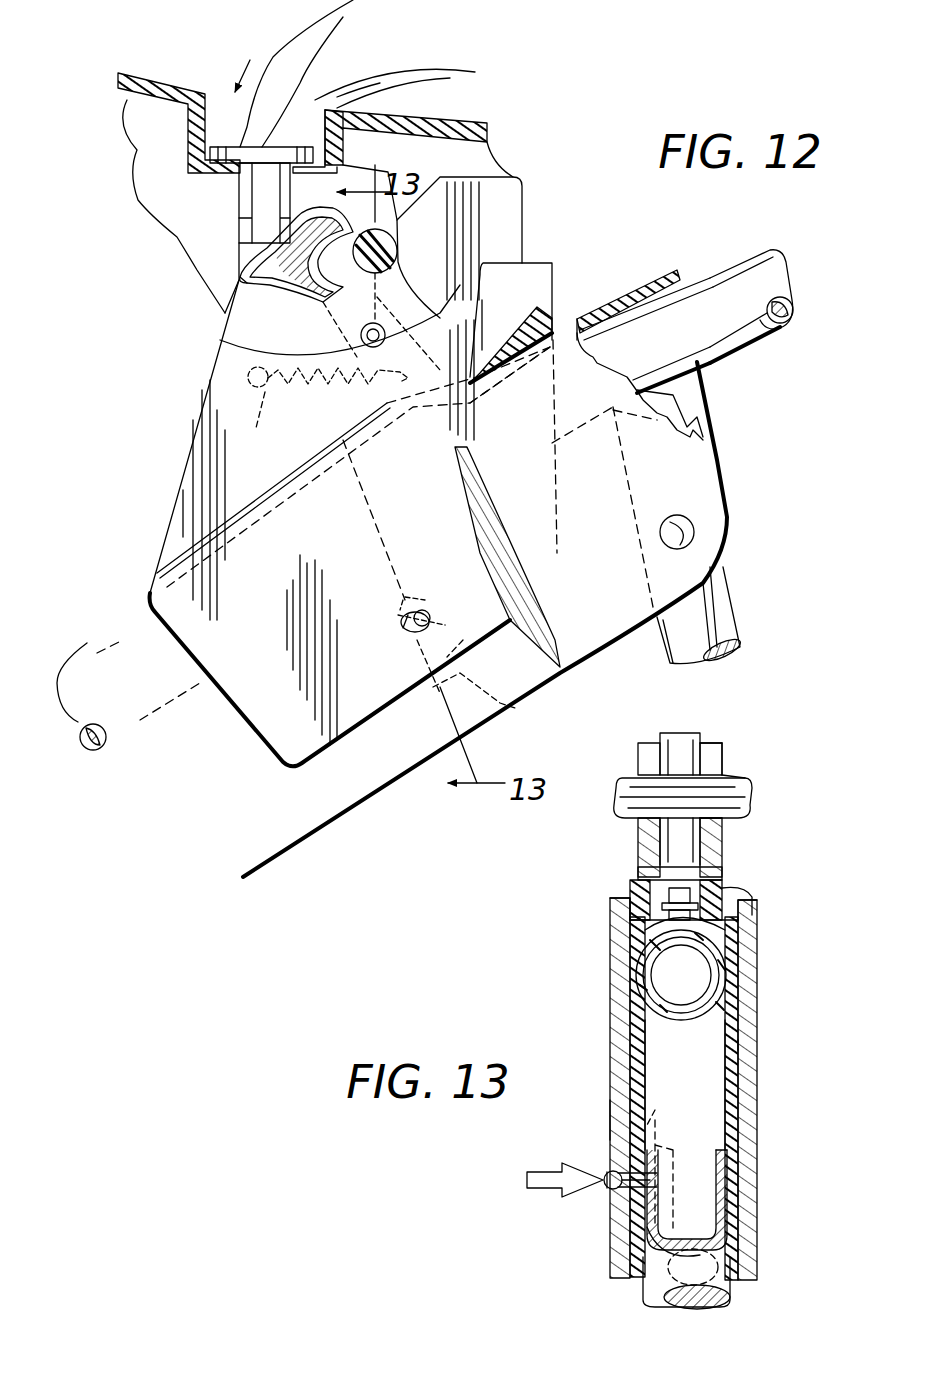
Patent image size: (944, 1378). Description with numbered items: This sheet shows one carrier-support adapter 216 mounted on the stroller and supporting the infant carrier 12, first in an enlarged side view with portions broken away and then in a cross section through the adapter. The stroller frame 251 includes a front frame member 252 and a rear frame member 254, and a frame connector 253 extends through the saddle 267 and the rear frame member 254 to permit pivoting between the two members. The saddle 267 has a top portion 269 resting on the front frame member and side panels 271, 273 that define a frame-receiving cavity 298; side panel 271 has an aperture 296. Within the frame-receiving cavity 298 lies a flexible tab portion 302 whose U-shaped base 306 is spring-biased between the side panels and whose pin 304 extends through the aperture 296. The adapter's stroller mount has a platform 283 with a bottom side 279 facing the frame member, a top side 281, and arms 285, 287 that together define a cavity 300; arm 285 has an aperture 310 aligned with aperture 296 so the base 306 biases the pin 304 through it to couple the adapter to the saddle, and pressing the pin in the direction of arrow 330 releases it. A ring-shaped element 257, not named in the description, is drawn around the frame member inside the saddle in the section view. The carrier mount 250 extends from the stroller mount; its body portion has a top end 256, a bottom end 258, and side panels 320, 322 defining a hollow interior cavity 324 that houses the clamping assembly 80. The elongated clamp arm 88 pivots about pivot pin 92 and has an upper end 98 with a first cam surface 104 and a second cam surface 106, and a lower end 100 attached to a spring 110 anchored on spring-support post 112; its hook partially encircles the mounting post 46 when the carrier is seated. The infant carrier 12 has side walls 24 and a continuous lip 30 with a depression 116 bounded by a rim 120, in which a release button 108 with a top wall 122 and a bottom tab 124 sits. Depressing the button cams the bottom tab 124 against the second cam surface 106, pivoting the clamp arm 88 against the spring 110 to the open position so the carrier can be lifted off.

In FIG. 12, the infant carrier 12 is at (478, 160).
In FIG. 12, the side wall 24 is at (462, 128).
In FIG. 12, the lip 30 is at (178, 92).
In FIG. 12, the mounting post 46 is at (397, 262).
In FIG. 13, the mounting post 46 is at (727, 793).
In FIG. 12, the clamping assembly 80 is at (227, 277).
In FIG. 12, the clamp arm 88 is at (280, 300).
In FIG. 13, the clamp arm 88 is at (702, 735).
In FIG. 12, the pivot pin 92 is at (385, 327).
In FIG. 12, the upper end 98 is at (237, 270).
In FIG. 12, the lower end 100 is at (400, 345).
In FIG. 13, the lower end 100 is at (660, 887).
In FIG. 12, the first cam surface 104 is at (330, 190).
In FIG. 13, the first cam surface 104 is at (678, 748).
In FIG. 12, the second cam surface 106 is at (257, 243).
In FIG. 12, the release button 108 is at (290, 60).
In FIG. 12, the spring 110 is at (243, 421).
In FIG. 13, the spring 110 is at (665, 893).
In FIG. 12, the spring-support post 112 is at (240, 377).
In FIG. 12, the depression 116 is at (240, 62).
In FIG. 12, the rim 120 is at (190, 143).
In FIG. 12, the top wall 122 is at (285, 102).
In FIG. 12, the bottom tab 124 is at (239, 193).
In FIG. 12, the carrier-support adapter 216 is at (183, 458).
In FIG. 12, the carrier mount 250 is at (505, 203).
In FIG. 13, the carrier mount 250 is at (728, 751).
In FIG. 12, the frame 251 is at (803, 300).
In FIG. 12, the front frame member 252 is at (495, 255).
In FIG. 13, the front frame member 252 is at (727, 852).
In FIG. 12, the frame connector 253 is at (690, 517).
In FIG. 12, the rear frame member 254 is at (705, 450).
In FIG. 13, the rear frame member 254 is at (653, 1285).
In FIG. 13, the top end 256 is at (712, 741).
In FIG. 13, the bushing ring 257 is at (640, 960).
In FIG. 13, the bottom end 258 is at (725, 897).
In FIG. 12, the saddle 267 is at (612, 300).
In FIG. 13, the saddle 267 is at (740, 1075).
In FIG. 13, the top portion 269 is at (663, 930).
In FIG. 12, the side panel 271 is at (273, 838).
In FIG. 13, the side panel 271 is at (630, 1097).
In FIG. 13, the side panel 273 is at (735, 1043).
In FIG. 13, the bottom side 279 is at (723, 953).
In FIG. 13, the top side 281 is at (742, 907).
In FIG. 13, the platform 283 is at (745, 935).
In FIG. 12, the arm 285 is at (170, 630).
In FIG. 13, the arm 285 is at (610, 1113).
In FIG. 13, the arm 287 is at (730, 1160).
In FIG. 12, the aperture 296 is at (403, 635).
In FIG. 13, the aperture 296 is at (610, 1172).
In FIG. 13, the frame-receiving cavity 298 is at (660, 1073).
In FIG. 13, the cavity 300 is at (733, 1155).
In FIG. 12, the flexible tab portion 302 is at (448, 642).
In FIG. 13, the flexible tab portion 302 is at (627, 1250).
In FIG. 12, the pin 304 is at (428, 612).
In FIG. 13, the pin 304 is at (655, 1120).
In FIG. 12, the U-shaped base 306 is at (515, 710).
In FIG. 13, the U-shaped base 306 is at (740, 1295).
In FIG. 13, the aperture 310 is at (673, 1160).
In FIG. 13, the side panel 320 is at (638, 755).
In FIG. 13, the side panel 322 is at (725, 800).
In FIG. 13, the hollow interior cavity 324 is at (727, 835).
In FIG. 13, the arrow 330 is at (550, 1185).